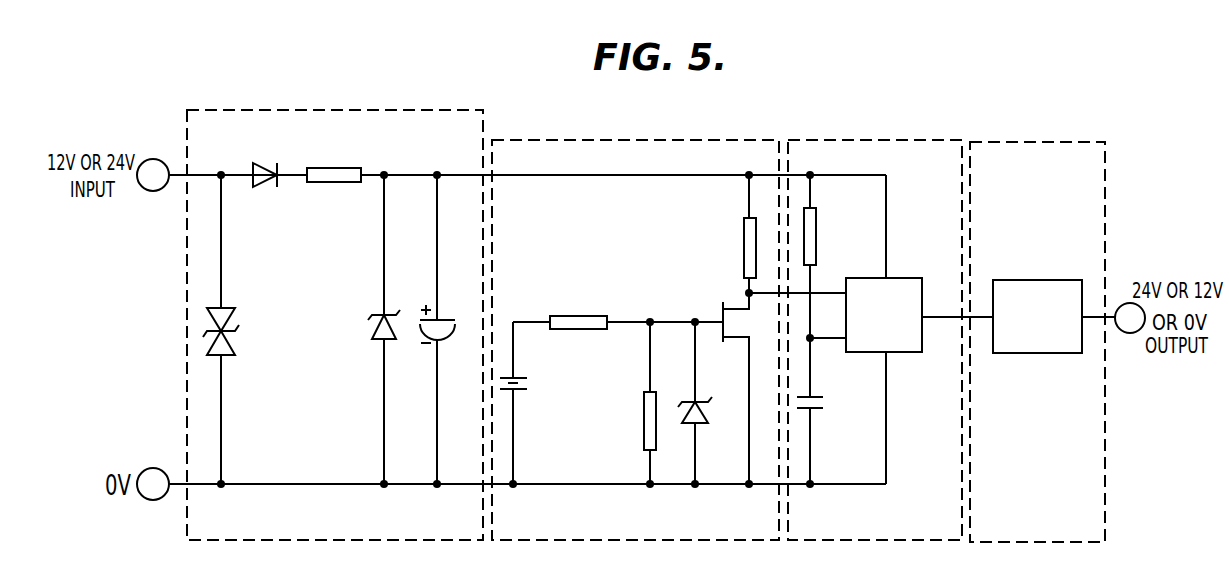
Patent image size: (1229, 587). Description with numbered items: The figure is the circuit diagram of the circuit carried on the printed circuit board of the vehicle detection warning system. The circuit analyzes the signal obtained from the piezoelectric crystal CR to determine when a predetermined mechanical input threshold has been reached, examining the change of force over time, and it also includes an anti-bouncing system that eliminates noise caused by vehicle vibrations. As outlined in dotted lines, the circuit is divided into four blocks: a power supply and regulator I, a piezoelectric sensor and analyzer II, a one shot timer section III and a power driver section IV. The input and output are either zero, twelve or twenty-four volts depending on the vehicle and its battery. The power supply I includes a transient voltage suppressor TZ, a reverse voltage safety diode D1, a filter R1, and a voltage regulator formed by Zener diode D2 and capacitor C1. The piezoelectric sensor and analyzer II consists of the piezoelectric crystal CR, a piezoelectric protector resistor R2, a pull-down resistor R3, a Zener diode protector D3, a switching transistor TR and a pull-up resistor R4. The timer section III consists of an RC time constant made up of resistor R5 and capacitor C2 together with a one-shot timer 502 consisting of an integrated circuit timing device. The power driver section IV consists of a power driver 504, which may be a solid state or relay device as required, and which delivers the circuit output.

The power supply and regulator I is at (313, 540).
The piezoelectric sensor and analyzer II is at (568, 540).
The one shot timer section III is at (833, 540).
The power driver section IV is at (1019, 542).
The reverse voltage safety diode D1 is at (265, 160).
The filter R1 is at (334, 162).
The transient voltage suppressor TZ is at (234, 329).
The Zener diode D2 is at (372, 329).
The capacitor C1 is at (448, 329).
The piezoelectric protector resistor R2 is at (618, 309).
The piezoelectric crystal CR is at (527, 403).
The pull-down resistor R3 is at (638, 403).
The Zener diode protector D3 is at (705, 403).
The switching transistor TR is at (784, 388).
The pull-up resistor R4 is at (738, 234).
The resistor R5 is at (825, 285).
The capacitor C2 is at (823, 437).
The one-shot timer 502 is at (898, 352).
The power driver 504 is at (1041, 353).